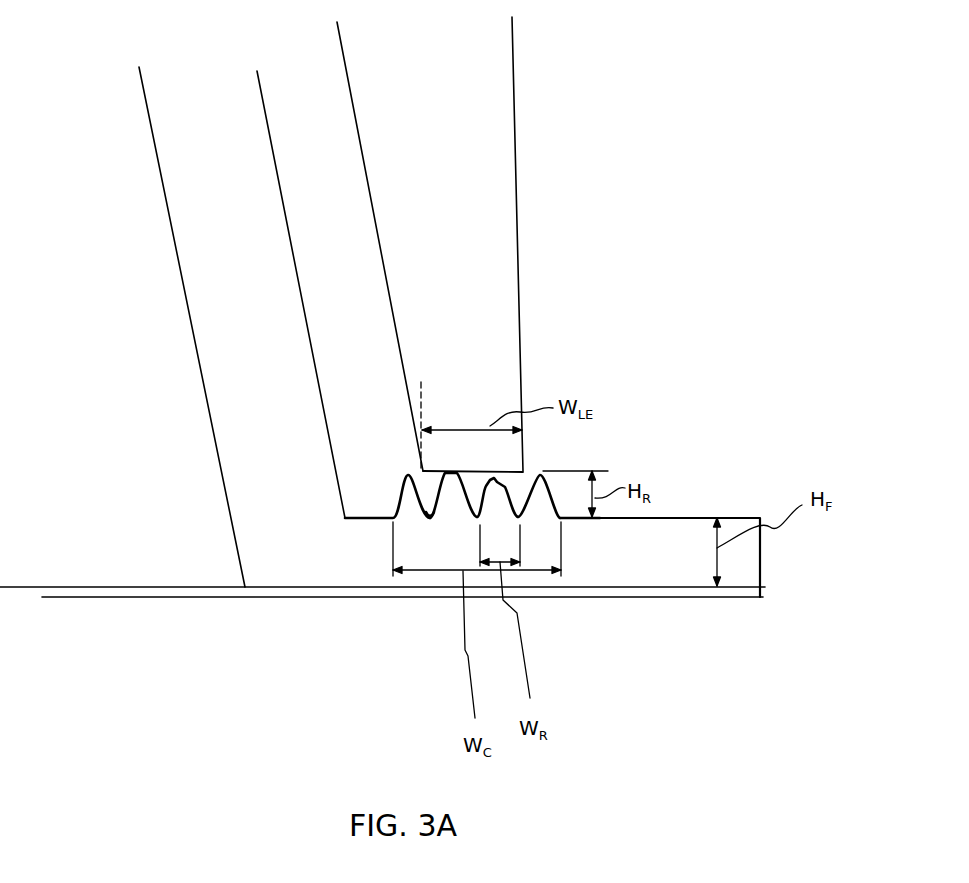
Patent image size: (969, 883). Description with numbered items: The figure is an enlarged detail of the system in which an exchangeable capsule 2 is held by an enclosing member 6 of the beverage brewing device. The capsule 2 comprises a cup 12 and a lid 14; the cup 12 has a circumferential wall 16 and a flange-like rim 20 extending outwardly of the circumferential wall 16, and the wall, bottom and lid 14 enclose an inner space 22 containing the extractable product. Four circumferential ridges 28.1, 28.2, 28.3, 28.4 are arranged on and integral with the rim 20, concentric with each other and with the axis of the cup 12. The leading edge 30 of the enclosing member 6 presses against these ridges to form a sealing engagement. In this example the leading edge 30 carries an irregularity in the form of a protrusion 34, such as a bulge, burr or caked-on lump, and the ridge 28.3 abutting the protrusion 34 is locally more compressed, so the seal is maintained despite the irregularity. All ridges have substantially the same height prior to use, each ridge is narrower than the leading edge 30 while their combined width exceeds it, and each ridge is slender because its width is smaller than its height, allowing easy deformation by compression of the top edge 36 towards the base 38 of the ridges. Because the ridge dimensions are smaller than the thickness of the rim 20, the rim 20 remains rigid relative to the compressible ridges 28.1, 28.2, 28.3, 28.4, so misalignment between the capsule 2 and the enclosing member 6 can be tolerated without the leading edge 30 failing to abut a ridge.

The exchangeable capsule 2 is at (258, 580).
The enclosing member 6 is at (515, 390).
The cup 12 is at (198, 228).
The lid 14 is at (628, 595).
The circumferential wall 16 is at (245, 418).
The flange-like rim 20 is at (742, 554).
The inner space 22 is at (186, 568).
The circumferential ridge 28.1 is at (412, 514).
The circumferential ridge 28.2 is at (453, 507).
The circumferential ridge 28.3 is at (556, 548).
The circumferential ridge 28.4 is at (601, 552).
The leading edge 30 is at (433, 477).
The protrusion 34 is at (490, 479).
The top edge 36 is at (540, 472).
The base 38 is at (550, 522).